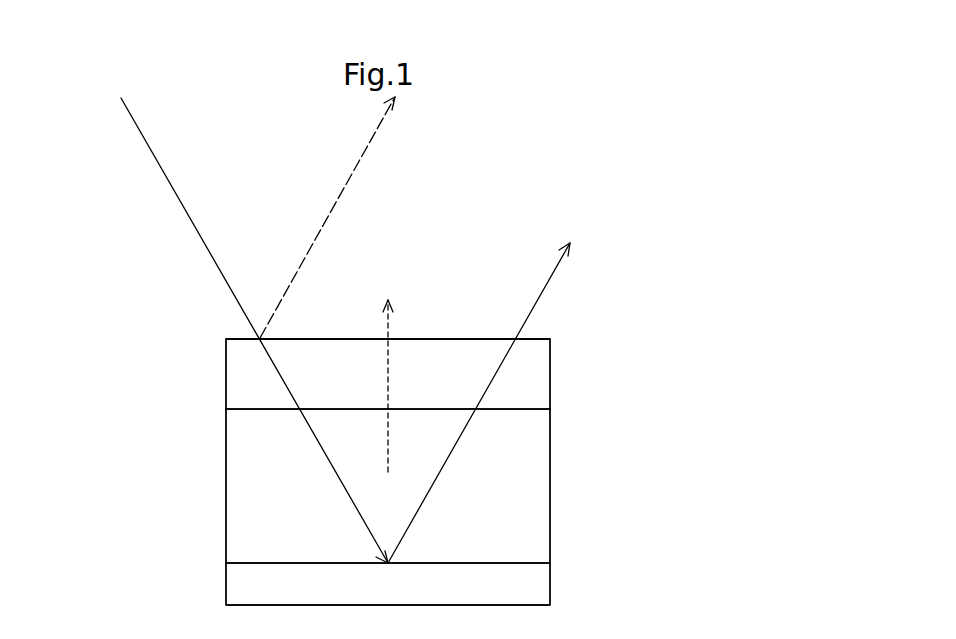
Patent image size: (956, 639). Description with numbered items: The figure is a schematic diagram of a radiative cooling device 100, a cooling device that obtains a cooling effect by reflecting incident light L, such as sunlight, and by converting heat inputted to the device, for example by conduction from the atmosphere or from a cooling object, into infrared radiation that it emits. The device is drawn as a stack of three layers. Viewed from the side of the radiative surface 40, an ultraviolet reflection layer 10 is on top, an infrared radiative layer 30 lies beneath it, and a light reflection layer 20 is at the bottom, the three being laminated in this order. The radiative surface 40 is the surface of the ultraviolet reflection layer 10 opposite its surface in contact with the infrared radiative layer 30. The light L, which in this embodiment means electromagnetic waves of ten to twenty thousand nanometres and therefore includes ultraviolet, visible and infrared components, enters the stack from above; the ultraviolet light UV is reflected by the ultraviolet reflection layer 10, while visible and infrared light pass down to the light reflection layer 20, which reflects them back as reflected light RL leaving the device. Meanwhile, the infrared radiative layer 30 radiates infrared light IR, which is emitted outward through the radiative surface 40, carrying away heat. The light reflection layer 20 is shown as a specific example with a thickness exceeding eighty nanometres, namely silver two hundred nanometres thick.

The radiative cooling device 100 is at (345, 424).
The ultraviolet reflection layer 10 is at (537, 378).
The infrared radiative layer 30 is at (538, 492).
The light reflection layer 20 is at (538, 586).
The radiative surface 40 is at (447, 339).
The light L is at (180, 202).
The reflected light RL is at (543, 288).
The ultraviolet light UV is at (338, 197).
The infrared light IR is at (387, 328).